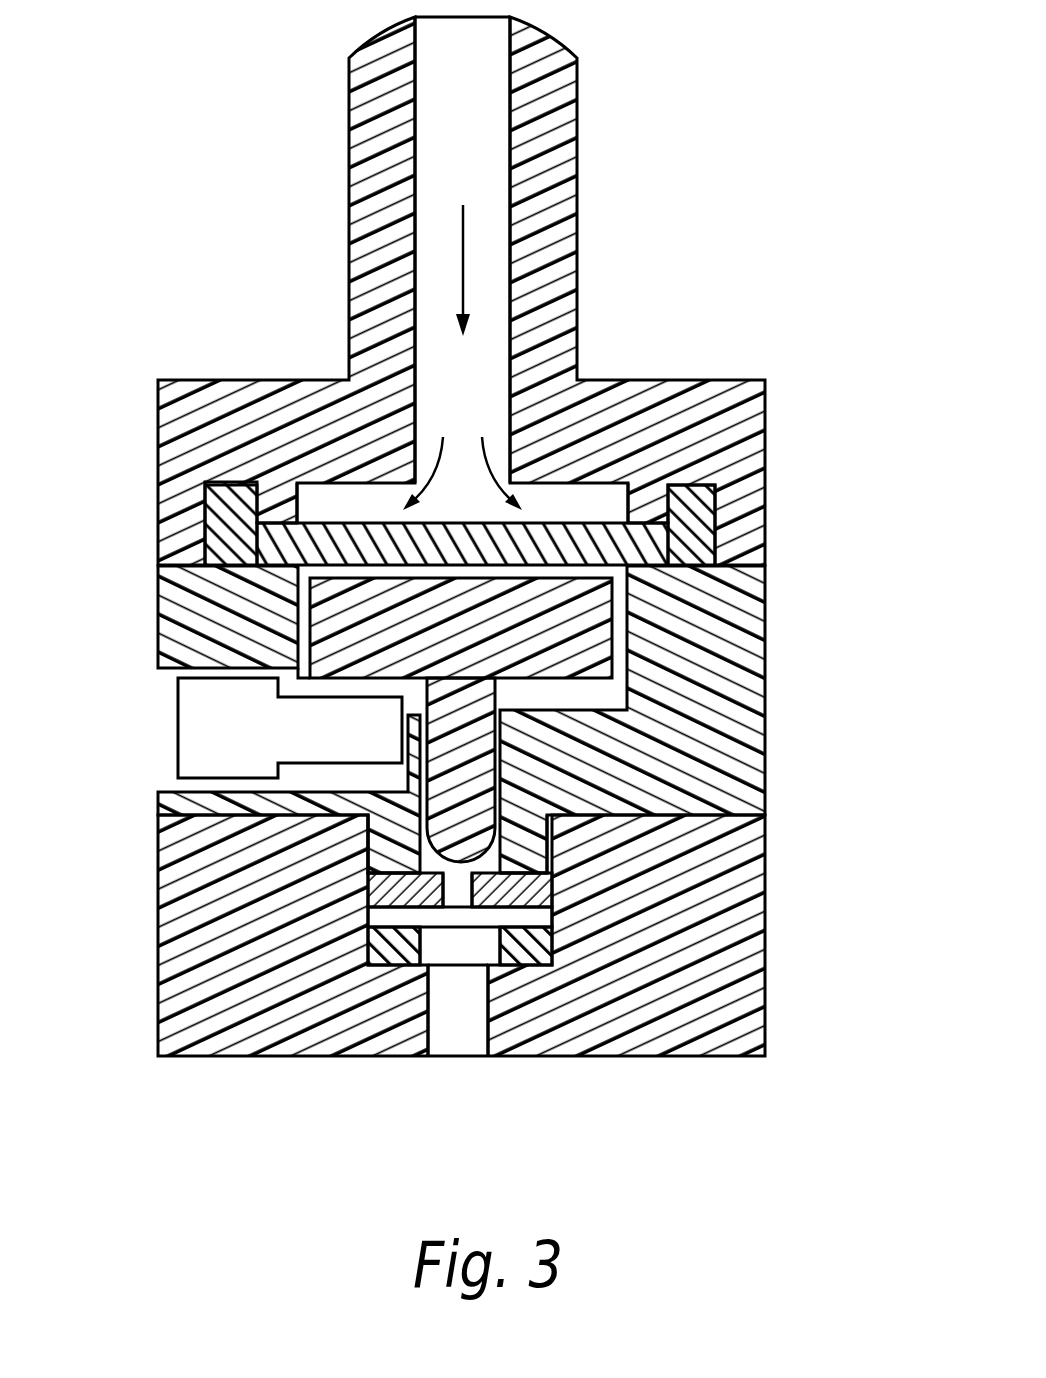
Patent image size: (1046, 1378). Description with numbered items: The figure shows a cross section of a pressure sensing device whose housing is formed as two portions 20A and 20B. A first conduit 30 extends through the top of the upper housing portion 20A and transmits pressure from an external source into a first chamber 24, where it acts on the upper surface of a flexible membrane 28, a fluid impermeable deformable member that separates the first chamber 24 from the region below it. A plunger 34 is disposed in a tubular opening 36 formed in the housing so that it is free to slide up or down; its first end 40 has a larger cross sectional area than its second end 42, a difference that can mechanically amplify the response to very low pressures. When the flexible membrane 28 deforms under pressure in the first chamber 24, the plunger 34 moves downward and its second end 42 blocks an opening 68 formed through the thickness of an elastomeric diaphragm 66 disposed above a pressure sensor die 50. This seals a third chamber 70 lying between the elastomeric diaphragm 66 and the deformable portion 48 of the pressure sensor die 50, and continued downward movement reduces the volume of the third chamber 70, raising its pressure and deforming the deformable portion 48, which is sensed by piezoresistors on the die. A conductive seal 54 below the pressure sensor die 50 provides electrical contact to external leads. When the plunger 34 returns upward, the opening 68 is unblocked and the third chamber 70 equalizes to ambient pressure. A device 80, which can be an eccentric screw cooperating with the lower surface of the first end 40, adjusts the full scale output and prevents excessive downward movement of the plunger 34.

The housing portion 20A is at (740, 433).
The housing portion 20B is at (722, 698).
The first chamber 24 is at (588, 498).
The flexible membrane 28 is at (700, 540).
The first conduit 30 is at (483, 168).
The plunger 34 is at (480, 800).
The tubular opening 36 is at (423, 845).
The first end of the plunger 40 is at (588, 612).
The second end of the plunger 42 is at (475, 843).
The deformable portion 48 is at (468, 937).
The pressure sensor die 50 is at (538, 918).
The conductive seal 54 is at (553, 958).
The elastomeric diaphragm 66 is at (553, 893).
The opening 68 is at (437, 950).
The third chamber 70 is at (458, 897).
The device 80 is at (200, 722).